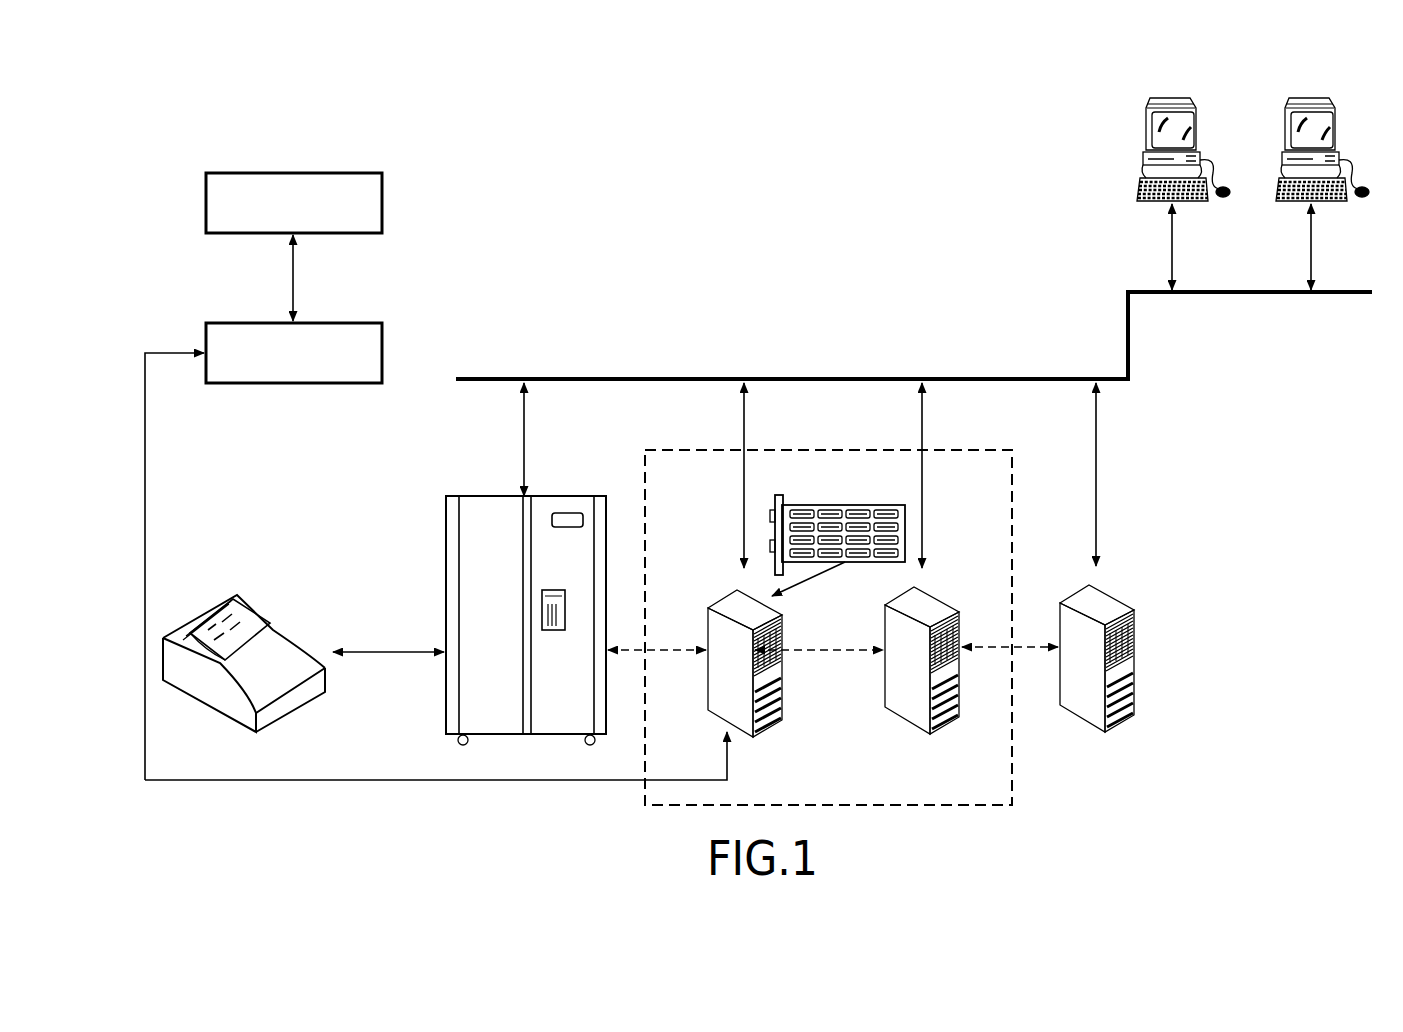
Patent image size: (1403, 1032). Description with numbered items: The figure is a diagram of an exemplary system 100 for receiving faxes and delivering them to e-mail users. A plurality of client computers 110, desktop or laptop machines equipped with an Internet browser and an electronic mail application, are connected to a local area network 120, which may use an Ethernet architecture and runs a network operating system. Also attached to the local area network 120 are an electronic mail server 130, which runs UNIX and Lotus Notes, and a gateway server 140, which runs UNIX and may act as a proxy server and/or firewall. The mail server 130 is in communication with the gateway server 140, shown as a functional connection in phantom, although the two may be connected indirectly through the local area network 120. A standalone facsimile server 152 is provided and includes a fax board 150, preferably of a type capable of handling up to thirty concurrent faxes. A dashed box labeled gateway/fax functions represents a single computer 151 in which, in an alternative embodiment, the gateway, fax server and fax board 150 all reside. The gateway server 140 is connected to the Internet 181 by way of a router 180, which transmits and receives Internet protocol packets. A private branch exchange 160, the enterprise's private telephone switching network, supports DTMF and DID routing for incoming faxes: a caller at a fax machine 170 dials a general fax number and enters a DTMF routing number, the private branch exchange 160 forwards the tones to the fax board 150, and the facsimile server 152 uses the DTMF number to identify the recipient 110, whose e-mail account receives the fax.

The system 100 is at (812, 280).
The client computers 110 is at (1177, 97).
The local area network 120 is at (822, 377).
The electronic mail server 130 is at (1113, 597).
The gateway server 140 is at (938, 597).
The fax board 150 is at (823, 505).
The single computer 151 is at (824, 449).
The facsimile server 152 is at (721, 597).
The private branch exchange 160 is at (482, 496).
The fax machine 170 is at (272, 624).
The router 180 is at (337, 323).
The Internet 181 is at (337, 173).